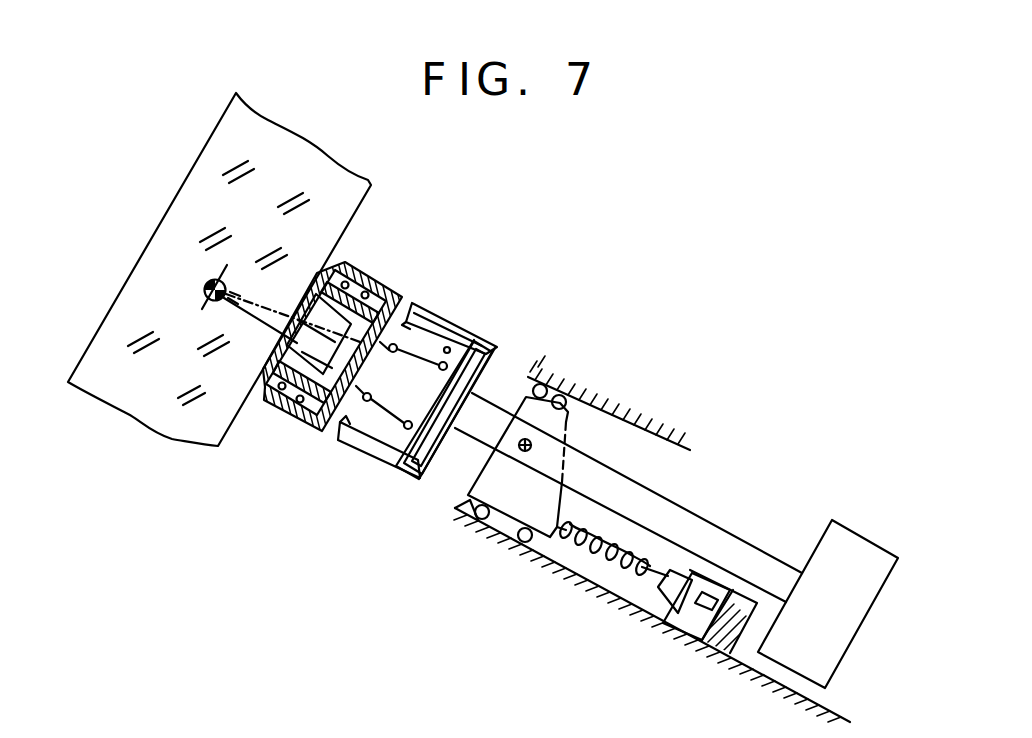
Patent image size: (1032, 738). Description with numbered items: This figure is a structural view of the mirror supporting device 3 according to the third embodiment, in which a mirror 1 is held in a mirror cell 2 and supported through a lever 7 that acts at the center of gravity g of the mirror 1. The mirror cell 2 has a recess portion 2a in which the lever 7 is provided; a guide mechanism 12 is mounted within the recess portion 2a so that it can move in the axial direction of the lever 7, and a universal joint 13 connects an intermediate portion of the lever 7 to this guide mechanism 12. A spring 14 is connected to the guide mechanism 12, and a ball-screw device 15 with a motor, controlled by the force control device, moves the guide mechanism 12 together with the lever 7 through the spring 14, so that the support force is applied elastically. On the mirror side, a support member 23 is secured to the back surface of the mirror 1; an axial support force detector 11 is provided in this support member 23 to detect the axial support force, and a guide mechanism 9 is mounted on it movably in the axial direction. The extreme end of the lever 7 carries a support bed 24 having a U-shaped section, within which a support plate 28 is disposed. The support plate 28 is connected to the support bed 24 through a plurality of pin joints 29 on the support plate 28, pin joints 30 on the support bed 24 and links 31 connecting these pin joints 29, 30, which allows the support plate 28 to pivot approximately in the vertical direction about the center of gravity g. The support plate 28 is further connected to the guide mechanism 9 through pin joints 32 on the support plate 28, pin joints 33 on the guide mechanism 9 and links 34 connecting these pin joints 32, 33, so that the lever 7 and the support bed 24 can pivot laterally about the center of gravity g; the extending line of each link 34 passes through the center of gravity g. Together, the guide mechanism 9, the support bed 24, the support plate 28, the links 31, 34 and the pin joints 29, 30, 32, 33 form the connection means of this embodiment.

The mirror 1 is at (128, 416).
The center of gravity of the mirror g is at (205, 288).
The mirror cell 2 is at (446, 528).
The recess portion 2a is at (662, 440).
The mirror supporting device 3 is at (656, 360).
The lever 7 is at (466, 434).
The guide mechanism 9 is at (290, 412).
The axial support force detector 11 is at (276, 378).
The guide mechanism 12 is at (536, 544).
The universal joint 13 is at (537, 442).
The spring 14 is at (604, 588).
The ball-screw device 15 is at (672, 636).
The support member 23 is at (348, 268).
The support bed 24 is at (490, 362).
The support plate 28 is at (498, 354).
The pin joints 29 is at (486, 346).
The pin joints 30 is at (410, 306).
The links 31 is at (448, 326).
The pin joints 32 is at (412, 470).
The pin joints 33 is at (368, 402).
The links 34 is at (386, 452).